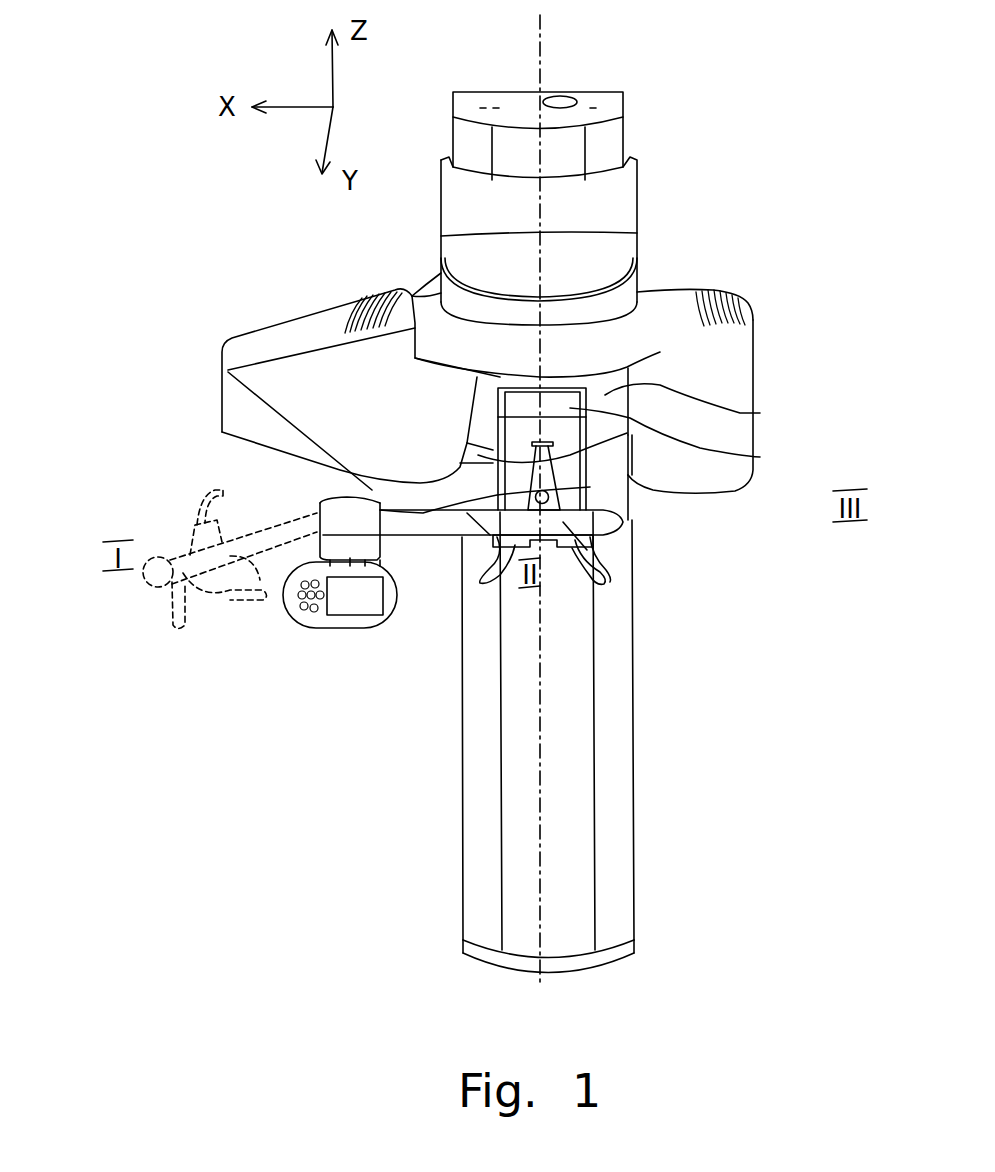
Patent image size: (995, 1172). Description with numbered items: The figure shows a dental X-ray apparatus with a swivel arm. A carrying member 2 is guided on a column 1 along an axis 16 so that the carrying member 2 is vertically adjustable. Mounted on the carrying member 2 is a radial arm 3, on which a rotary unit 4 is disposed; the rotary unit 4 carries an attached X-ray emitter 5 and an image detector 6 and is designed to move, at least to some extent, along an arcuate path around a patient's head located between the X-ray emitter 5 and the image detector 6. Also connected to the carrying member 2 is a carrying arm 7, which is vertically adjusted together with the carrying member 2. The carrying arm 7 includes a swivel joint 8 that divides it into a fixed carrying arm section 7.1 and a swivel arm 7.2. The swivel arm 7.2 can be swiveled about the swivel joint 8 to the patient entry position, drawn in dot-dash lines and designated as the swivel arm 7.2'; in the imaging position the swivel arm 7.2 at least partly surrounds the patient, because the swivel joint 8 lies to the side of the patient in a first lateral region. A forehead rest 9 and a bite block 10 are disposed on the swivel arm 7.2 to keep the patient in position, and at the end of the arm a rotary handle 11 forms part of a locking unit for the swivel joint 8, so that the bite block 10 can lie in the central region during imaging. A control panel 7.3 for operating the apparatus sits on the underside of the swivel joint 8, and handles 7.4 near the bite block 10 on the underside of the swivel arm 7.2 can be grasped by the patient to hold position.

The column 1 is at (610, 132).
The carrying member 2 is at (608, 390).
The radial arm 3 is at (595, 220).
The rotary unit 4 is at (655, 285).
The X-ray emitter 5 is at (723, 360).
The image detector 6 is at (297, 333).
The carrying arm 7 is at (607, 465).
The fixed carrying arm section 7.1 is at (228, 372).
The swivel arm 7.2 is at (714, 637).
The swivel arm in entry position 7.2' is at (185, 545).
The control panel 7.3 is at (323, 623).
The handles 7.4 is at (590, 570).
The swivel joint 8 is at (343, 512).
The forehead rest 9 is at (603, 408).
The bite block 10 is at (630, 530).
The rotary handle 11 is at (640, 560).
The axis 16 is at (540, 64).